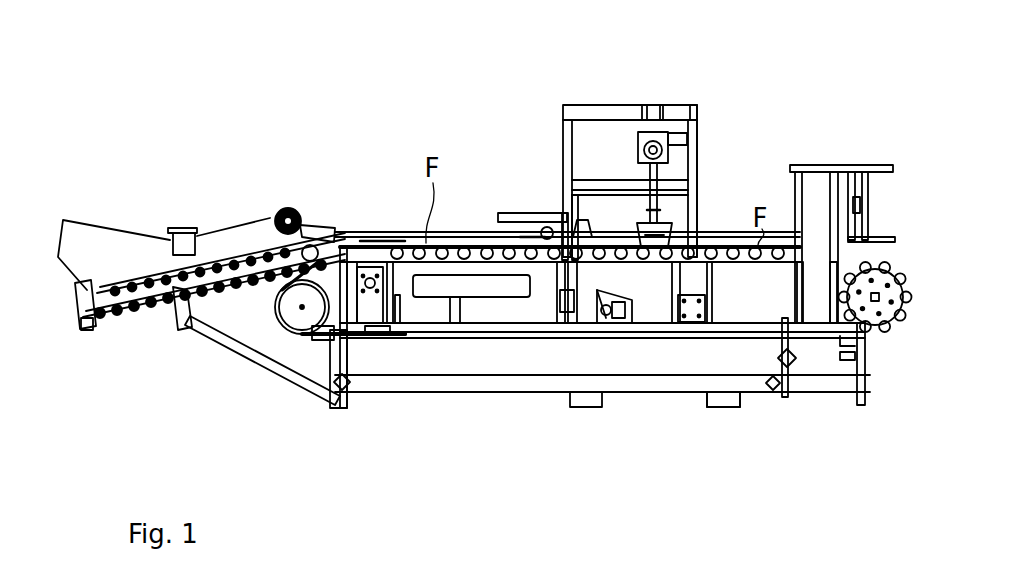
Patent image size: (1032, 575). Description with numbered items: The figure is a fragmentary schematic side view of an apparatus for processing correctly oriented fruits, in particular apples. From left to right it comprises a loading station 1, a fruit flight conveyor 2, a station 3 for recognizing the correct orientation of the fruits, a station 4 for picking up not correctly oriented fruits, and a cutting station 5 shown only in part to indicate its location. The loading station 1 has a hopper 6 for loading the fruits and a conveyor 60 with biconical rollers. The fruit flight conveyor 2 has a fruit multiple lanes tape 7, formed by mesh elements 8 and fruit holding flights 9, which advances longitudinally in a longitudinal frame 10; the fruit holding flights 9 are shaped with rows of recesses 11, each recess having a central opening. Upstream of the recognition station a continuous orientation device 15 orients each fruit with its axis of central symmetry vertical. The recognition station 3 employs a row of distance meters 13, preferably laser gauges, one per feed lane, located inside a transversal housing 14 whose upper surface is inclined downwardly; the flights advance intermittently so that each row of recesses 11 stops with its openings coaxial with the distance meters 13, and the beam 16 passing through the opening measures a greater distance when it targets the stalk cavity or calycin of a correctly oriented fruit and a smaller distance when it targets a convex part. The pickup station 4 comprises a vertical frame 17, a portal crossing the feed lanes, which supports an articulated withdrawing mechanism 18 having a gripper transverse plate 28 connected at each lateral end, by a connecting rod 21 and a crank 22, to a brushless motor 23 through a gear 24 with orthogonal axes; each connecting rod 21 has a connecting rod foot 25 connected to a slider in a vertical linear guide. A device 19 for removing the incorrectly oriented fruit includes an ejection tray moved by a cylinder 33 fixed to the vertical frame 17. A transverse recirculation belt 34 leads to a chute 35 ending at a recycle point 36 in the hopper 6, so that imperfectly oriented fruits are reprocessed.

The loading station 1 is at (130, 322).
The fruit flight conveyor 2 is at (271, 325).
The station for recognizing the correct orientation of the fruits 3 is at (614, 342).
The station for picking up not correctly oriented fruits 4 is at (678, 97).
The cutting station 5 is at (859, 152).
The hopper 6 is at (97, 226).
The fruit multiple lanes tape 7 is at (380, 343).
The mesh elements 8 is at (332, 332).
The fruit holding flights 9 is at (370, 332).
The longitudinal frame 10 is at (686, 392).
The recesses 11 is at (790, 250).
The distance meters 13 is at (598, 290).
The housing 14 is at (637, 288).
The continuous orientation device 15 is at (466, 297).
The beam 16 is at (623, 278).
The vertical frame 17 is at (697, 112).
The articulated withdrawing mechanism 18 is at (657, 147).
The device for removing the not correctly oriented fruit 19 is at (519, 152).
The connecting rod 21 is at (680, 166).
The crank 22 is at (640, 160).
The brushless motor 23 is at (700, 116).
The gear with orthogonal axes 24 is at (640, 133).
The connecting rod foot 25 is at (655, 222).
The gripper transverse plate 28 is at (665, 233).
The cylinder 33 is at (548, 218).
The transverse recirculation belt 34 is at (533, 237).
The chute 35 is at (398, 240).
The recycle point 36 is at (187, 234).
The conveyor with biconical rollers 60 is at (92, 330).